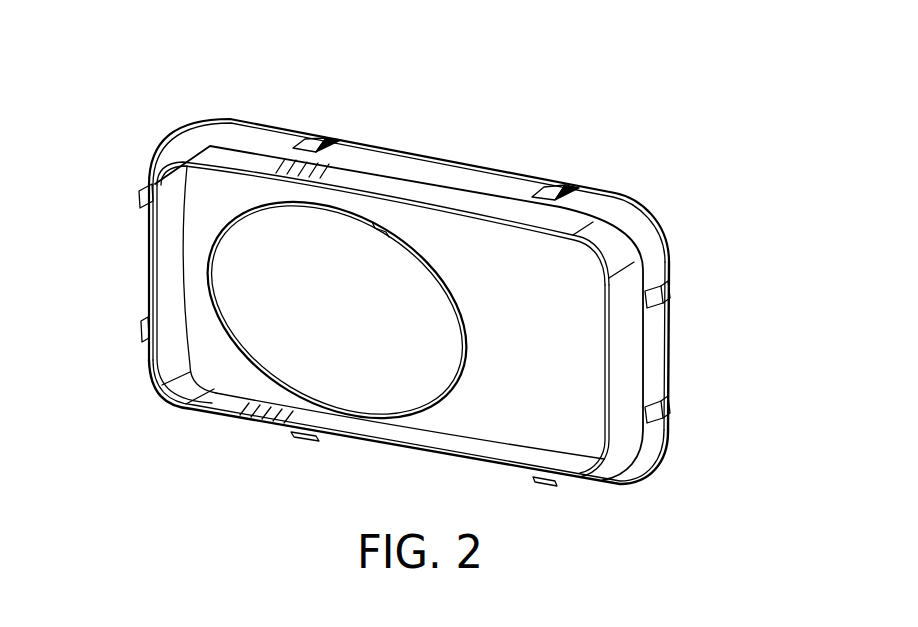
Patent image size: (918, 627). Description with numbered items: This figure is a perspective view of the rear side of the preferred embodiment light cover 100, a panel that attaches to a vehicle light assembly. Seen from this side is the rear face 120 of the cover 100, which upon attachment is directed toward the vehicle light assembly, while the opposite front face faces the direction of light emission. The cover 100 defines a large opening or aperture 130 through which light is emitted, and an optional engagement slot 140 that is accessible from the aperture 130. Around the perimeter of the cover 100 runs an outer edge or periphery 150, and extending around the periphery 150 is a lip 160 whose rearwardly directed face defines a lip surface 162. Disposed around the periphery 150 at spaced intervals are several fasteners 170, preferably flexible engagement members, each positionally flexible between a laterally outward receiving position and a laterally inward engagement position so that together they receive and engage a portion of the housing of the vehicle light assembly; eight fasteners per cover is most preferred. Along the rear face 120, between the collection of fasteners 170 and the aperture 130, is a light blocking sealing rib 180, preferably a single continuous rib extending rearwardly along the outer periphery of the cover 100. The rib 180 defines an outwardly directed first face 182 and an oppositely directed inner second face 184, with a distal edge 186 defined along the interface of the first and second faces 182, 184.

The light cover 100 is at (643, 110).
The rear face 120 is at (470, 257).
The opening or aperture 130 is at (341, 216).
The engagement slot 140 is at (378, 220).
The outer edge or periphery 150 is at (170, 138).
The lip 160 is at (646, 242).
The lip surface 162 is at (650, 442).
The fastener 170 is at (324, 137).
The light blocking sealing rib 180 is at (226, 156).
The first face 182 is at (491, 205).
The second face 184 is at (170, 330).
The distal edge 186 is at (149, 272).